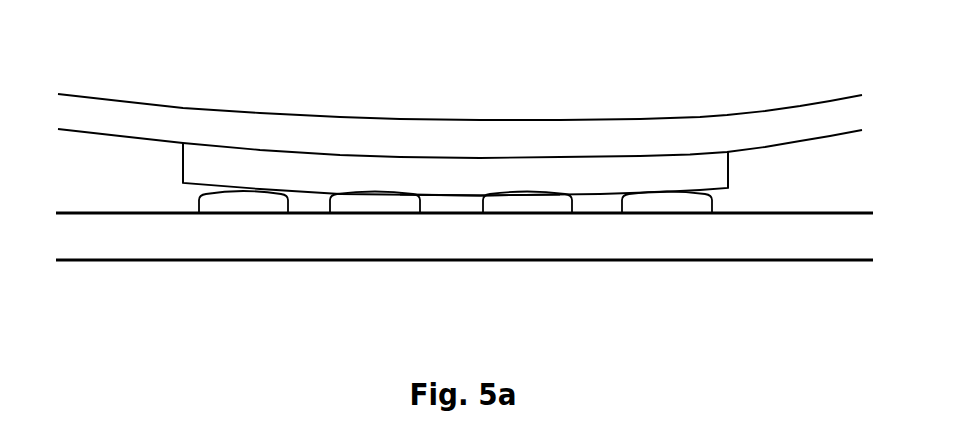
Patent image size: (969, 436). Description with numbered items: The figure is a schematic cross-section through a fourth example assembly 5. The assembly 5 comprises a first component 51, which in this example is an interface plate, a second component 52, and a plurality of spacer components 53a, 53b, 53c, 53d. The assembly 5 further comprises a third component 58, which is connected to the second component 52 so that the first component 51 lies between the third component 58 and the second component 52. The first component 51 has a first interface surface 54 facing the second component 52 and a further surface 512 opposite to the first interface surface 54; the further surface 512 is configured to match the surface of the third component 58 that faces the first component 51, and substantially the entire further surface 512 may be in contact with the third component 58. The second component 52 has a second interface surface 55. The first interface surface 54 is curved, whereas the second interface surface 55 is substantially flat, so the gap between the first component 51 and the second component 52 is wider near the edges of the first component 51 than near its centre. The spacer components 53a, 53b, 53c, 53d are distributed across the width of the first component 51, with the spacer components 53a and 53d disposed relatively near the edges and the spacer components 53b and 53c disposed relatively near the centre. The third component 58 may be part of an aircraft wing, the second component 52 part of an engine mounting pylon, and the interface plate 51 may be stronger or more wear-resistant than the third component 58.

The assembly 5 is at (180, 53).
The third component 58 is at (447, 151).
The first component 51 is at (447, 186).
The first interface surface 54 is at (433, 195).
The further surface 512 is at (565, 157).
The spacer component 53a is at (239, 202).
The spacer component 53b is at (375, 203).
The spacer component 53c is at (522, 207).
The spacer component 53d is at (669, 203).
The second interface surface 55 is at (305, 215).
The second component 52 is at (447, 246).